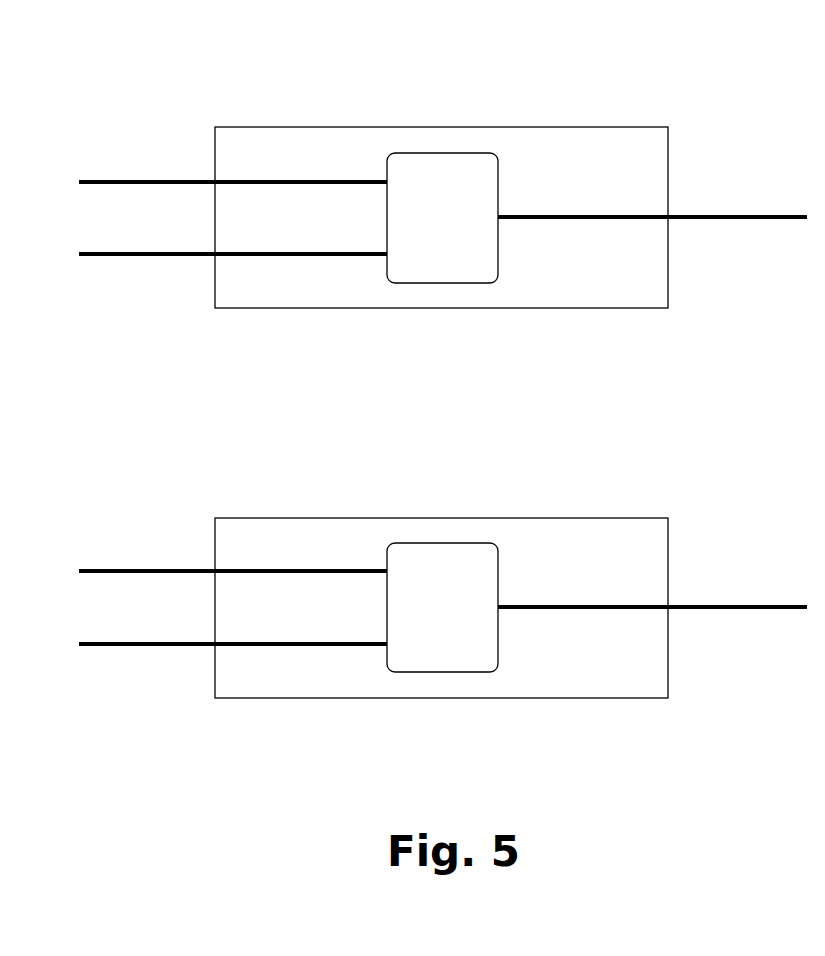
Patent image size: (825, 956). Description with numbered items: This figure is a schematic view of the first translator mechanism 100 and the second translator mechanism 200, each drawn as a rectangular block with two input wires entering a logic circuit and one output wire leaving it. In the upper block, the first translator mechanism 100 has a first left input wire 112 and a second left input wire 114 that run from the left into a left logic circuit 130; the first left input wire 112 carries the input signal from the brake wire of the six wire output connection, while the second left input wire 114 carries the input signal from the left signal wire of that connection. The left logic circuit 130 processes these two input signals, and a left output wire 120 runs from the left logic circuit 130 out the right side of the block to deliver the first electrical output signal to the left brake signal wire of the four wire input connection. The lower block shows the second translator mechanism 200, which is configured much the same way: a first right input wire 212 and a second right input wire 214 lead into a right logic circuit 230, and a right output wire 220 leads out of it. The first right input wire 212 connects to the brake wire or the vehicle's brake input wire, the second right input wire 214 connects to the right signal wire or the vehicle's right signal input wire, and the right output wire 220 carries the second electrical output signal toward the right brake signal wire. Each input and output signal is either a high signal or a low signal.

The first translator mechanism 100 is at (445, 113).
The first left input wire 112 is at (133, 176).
The second left input wire 114 is at (140, 258).
The left output wire 120 is at (737, 221).
The left logic circuit 130 is at (470, 285).
The second translator mechanism 200 is at (443, 505).
The first right input wire 212 is at (133, 565).
The second right input wire 214 is at (140, 648).
The right output wire 220 is at (736, 611).
The right logic circuit 230 is at (470, 674).